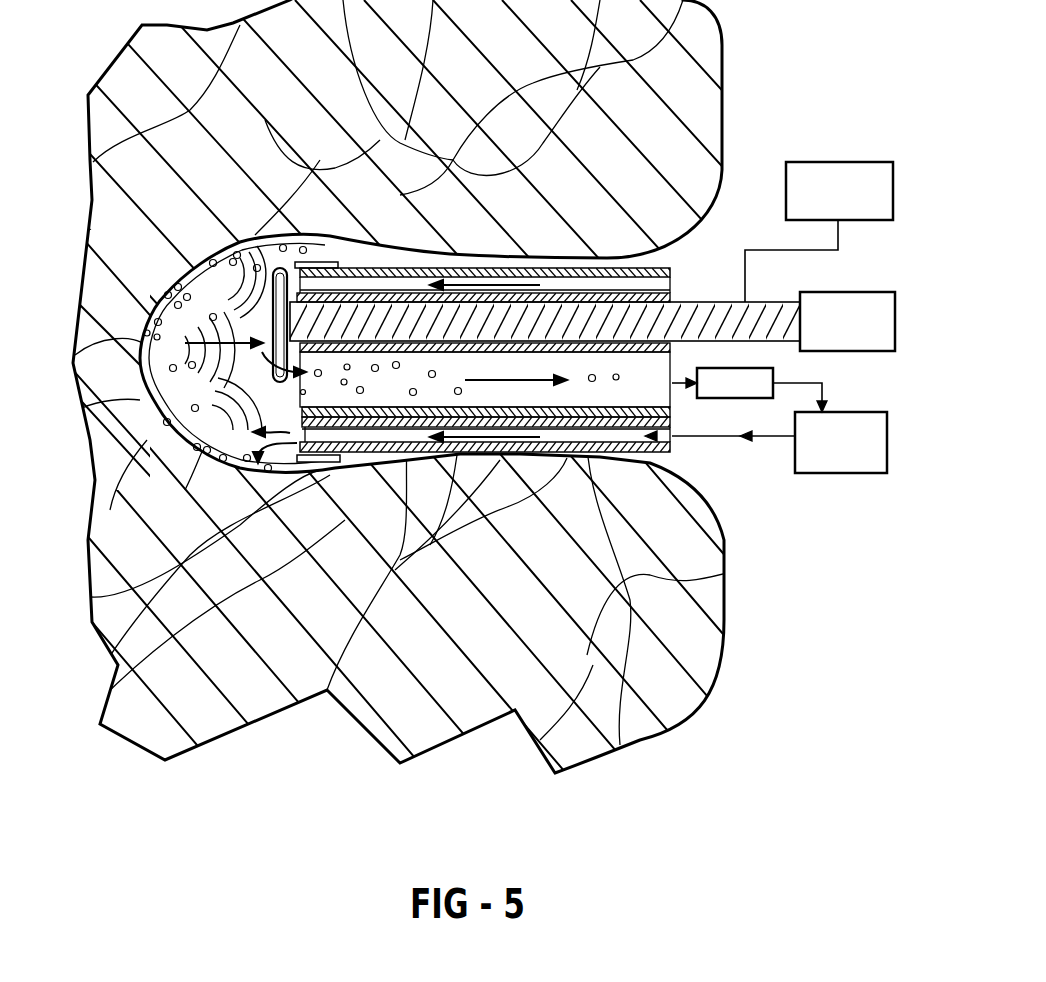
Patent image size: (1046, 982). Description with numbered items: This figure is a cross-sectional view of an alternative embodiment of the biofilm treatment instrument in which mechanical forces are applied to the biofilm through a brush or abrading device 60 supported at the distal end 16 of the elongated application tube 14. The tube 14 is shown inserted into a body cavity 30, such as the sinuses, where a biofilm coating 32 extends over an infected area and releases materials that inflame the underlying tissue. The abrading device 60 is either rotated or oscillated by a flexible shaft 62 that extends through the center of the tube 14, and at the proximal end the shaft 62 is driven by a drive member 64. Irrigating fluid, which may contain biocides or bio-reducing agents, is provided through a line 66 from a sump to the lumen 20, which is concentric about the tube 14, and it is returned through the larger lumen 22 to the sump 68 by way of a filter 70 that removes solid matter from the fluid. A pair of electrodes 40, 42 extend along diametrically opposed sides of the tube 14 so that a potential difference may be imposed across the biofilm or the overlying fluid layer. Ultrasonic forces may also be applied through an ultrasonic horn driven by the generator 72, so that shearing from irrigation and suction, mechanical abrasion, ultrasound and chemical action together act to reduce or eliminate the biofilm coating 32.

The application tube 14 is at (633, 268).
The distal end 16 is at (532, 368).
The lumen 20 is at (93, 250).
The larger lumen 22 is at (372, 390).
The body cavity 30 is at (266, 157).
The biofilm coating 32 is at (188, 492).
The electrode 40 is at (327, 263).
The electrode 42 is at (323, 470).
The brush or abrading device 60 is at (227, 233).
The flexible shaft 62 is at (710, 302).
The drive member 64 is at (853, 352).
The line 66 is at (752, 440).
The sump 68 is at (852, 473).
The filter 70 is at (722, 398).
The generator 72 is at (838, 162).